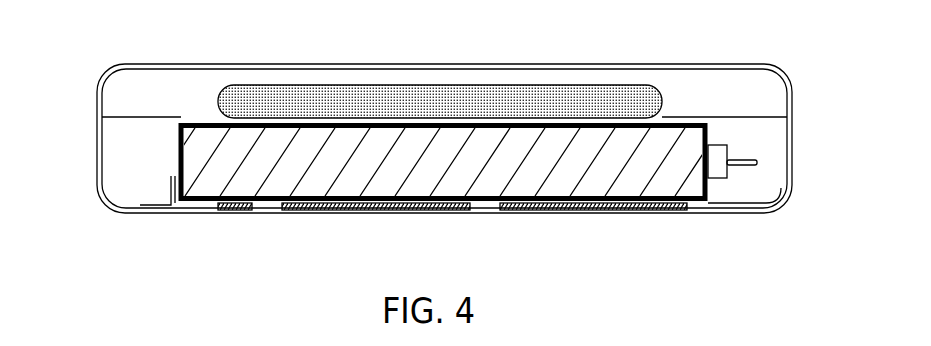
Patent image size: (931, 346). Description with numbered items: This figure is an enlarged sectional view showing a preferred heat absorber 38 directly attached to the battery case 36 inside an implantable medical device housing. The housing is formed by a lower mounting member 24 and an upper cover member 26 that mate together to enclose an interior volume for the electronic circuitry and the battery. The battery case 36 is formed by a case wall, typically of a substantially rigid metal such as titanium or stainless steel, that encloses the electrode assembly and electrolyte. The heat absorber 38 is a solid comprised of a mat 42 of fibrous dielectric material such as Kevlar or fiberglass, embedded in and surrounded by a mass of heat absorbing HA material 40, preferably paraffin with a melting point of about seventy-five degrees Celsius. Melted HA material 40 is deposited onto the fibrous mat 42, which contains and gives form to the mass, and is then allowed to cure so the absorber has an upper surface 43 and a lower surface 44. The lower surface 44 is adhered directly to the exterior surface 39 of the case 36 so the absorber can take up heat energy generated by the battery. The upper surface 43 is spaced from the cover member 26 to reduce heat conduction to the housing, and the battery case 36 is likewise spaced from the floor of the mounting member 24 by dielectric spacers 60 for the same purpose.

The lower mounting member 24 is at (163, 212).
The upper cover member 26 is at (178, 65).
The case 36 is at (693, 205).
The heat absorber 38 is at (588, 78).
The exterior surface 39 is at (667, 118).
The HA material 40 is at (257, 90).
The mat 42 is at (408, 85).
The upper surface 43 is at (492, 83).
The lower surface 44 is at (345, 128).
The dielectric spacers 60 is at (313, 212).